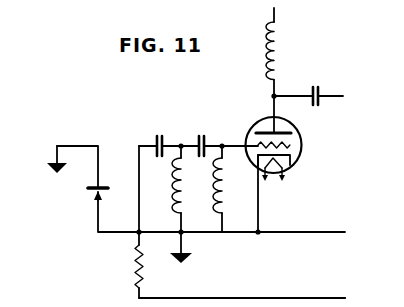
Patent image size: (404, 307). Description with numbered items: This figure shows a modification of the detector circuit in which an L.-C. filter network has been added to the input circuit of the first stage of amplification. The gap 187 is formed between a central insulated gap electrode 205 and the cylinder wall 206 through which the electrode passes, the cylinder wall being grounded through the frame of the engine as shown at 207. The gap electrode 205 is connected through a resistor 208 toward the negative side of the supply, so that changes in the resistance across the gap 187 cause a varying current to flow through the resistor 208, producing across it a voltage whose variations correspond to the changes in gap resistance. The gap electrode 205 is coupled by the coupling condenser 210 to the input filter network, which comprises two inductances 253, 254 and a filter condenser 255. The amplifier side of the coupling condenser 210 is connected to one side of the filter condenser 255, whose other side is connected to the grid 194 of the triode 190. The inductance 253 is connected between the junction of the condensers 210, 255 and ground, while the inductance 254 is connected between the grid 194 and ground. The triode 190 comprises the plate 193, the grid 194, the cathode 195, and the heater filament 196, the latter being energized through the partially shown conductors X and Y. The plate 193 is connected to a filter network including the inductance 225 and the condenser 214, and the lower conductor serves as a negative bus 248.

The inductance 225 is at (280, 58).
The condenser 214 is at (315, 86).
The triode 190 is at (250, 129).
The plate 193 is at (264, 132).
The grid 194 is at (291, 143).
The cathode 195 is at (292, 155).
The heater filament 196 is at (284, 164).
The coupling condenser 210 is at (158, 133).
The filter condenser 255 is at (201, 134).
The inductance 253 is at (179, 203).
The inductance 254 is at (222, 203).
The ground 207 is at (53, 170).
The cylinder wall 206 is at (100, 187).
The gap 187 is at (92, 189).
The gap electrode 205 is at (101, 195).
The resistor 208 is at (134, 267).
The negative bus 248 is at (210, 298).